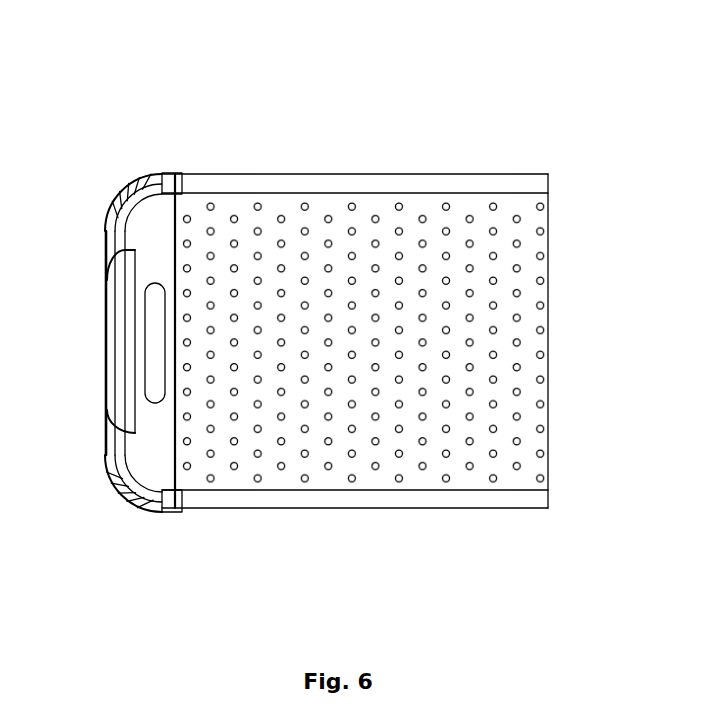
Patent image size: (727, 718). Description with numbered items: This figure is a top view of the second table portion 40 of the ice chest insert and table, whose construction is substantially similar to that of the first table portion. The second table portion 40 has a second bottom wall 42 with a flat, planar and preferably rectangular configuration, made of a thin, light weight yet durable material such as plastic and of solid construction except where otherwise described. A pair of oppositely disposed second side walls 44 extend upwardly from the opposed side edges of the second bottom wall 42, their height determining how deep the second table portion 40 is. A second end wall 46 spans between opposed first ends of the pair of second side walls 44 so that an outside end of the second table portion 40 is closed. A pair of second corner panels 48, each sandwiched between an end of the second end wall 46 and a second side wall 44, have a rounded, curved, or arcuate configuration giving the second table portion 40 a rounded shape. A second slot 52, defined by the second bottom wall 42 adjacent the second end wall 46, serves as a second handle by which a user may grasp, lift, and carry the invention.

The second table portion 40 is at (348, 72).
The second bottom wall 42 is at (507, 330).
The second side walls 44 is at (412, 173).
The second end wall 46 is at (104, 250).
The second corner panels 48 is at (130, 185).
The second slot 52 is at (157, 389).